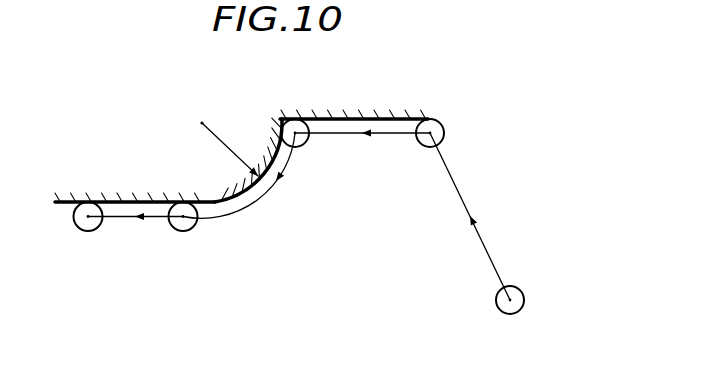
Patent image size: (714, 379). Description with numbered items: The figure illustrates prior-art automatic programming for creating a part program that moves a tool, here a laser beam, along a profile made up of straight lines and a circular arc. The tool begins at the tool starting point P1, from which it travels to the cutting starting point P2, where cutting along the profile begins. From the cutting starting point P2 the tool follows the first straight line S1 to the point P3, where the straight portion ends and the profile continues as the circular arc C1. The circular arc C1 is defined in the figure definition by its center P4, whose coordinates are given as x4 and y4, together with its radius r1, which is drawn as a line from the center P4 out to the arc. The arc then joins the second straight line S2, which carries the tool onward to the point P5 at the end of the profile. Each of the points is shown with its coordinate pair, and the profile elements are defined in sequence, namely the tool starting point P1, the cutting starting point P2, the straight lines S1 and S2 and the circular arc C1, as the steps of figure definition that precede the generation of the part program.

The tool starting point P1 is at (556, 301).
The cutting starting point P2 is at (470, 116).
The profile point P3 is at (305, 118).
The circular arc center P4 is at (198, 112).
The profile end point P5 is at (77, 199).
The straight line S1 is at (363, 114).
The straight line S2 is at (142, 201).
The circular arc C1 is at (243, 195).
The radius r1 is at (230, 149).